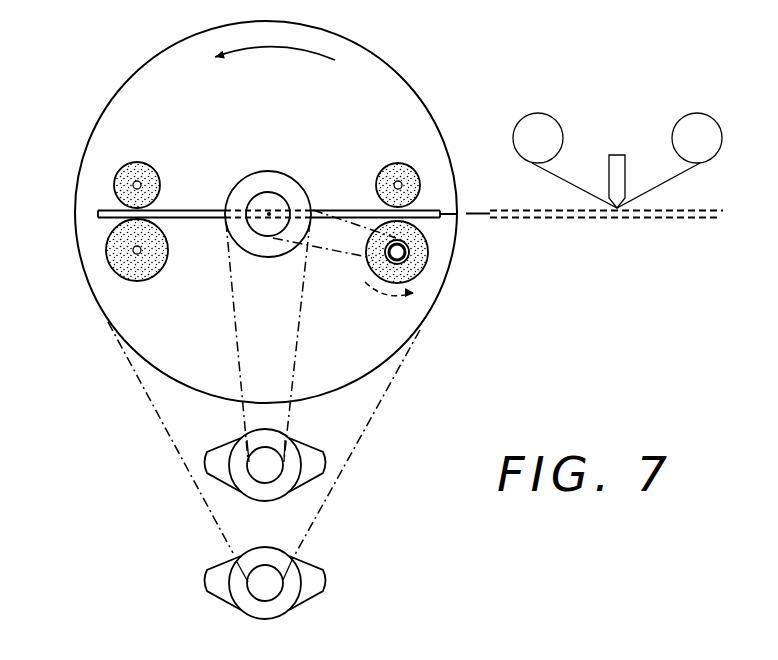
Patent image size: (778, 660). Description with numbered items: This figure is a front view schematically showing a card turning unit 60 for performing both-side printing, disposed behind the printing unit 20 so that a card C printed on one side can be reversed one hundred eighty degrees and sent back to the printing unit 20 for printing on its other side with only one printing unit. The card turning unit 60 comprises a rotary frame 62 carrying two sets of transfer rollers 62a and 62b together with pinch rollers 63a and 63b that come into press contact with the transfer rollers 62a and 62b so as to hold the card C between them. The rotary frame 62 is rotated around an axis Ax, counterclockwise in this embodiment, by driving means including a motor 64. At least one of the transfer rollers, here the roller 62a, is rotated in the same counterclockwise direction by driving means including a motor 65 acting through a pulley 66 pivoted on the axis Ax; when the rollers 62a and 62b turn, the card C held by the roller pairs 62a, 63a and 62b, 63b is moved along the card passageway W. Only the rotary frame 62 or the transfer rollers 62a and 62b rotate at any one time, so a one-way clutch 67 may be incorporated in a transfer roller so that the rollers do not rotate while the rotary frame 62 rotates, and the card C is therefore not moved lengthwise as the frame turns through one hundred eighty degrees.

The card turning unit 60 is at (134, 73).
The rotary frame 62 is at (397, 98).
The transfer roller 62a is at (422, 273).
The transfer roller 62b is at (113, 254).
The pinch roller 63a is at (412, 171).
The pinch roller 63b is at (133, 185).
The motor 64 is at (292, 590).
The motor 65 is at (287, 475).
The pulley 66 is at (283, 180).
The one-way clutch 67 is at (405, 243).
The printing unit 20 is at (612, 222).
The axis Ax is at (270, 212).
The card C is at (198, 215).
The card passageway W is at (477, 212).